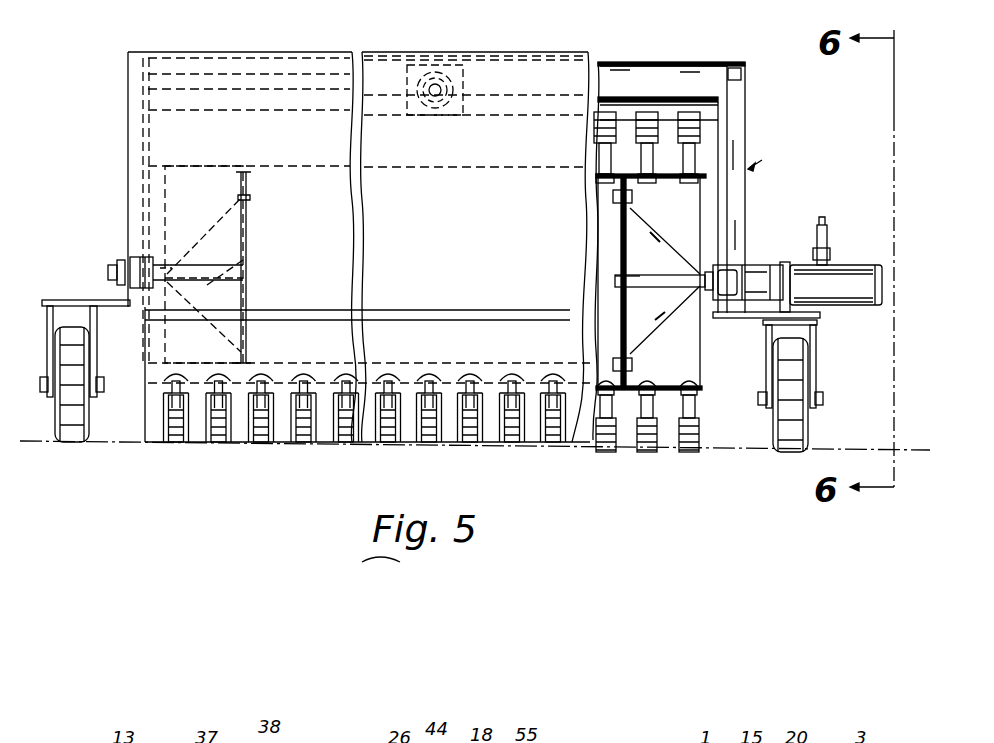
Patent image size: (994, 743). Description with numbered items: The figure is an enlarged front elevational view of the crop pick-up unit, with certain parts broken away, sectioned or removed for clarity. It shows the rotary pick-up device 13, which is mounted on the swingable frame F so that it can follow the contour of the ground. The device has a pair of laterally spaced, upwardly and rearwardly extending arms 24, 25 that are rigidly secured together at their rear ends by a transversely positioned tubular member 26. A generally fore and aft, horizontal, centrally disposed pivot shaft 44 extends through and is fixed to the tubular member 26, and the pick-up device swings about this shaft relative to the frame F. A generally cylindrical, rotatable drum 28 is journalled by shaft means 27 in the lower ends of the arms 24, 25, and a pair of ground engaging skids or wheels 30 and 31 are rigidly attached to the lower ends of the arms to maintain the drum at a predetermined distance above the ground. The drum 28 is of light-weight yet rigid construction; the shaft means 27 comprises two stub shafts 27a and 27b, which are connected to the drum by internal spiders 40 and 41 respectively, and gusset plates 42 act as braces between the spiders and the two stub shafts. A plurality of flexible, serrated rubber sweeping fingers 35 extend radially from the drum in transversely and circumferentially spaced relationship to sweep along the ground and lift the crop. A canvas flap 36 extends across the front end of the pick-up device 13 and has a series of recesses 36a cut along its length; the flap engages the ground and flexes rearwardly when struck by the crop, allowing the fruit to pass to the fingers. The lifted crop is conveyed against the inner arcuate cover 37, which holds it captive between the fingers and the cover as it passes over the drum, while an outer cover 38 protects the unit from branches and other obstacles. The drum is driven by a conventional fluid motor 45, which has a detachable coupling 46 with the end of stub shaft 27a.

The rotary pick-up device 13 is at (130, 51).
The arm 25 is at (128, 180).
The tubular member 26 is at (540, 61).
The pivot shaft 44 is at (445, 78).
The rotatable drum 28 is at (207, 165).
The internal spider 41 is at (250, 240).
The gusset plate 42 is at (240, 198).
The internal spider 40 is at (621, 246).
The shaft means 27 is at (108, 270).
The stub shaft 27a is at (668, 273).
The stub shaft 27b is at (170, 268).
The ground engaging wheel 31 is at (88, 412).
The rubber sweeping finger 35 is at (173, 444).
The canvas flap 36 is at (278, 447).
The recess 36a is at (346, 447).
The outer cover 38 is at (647, 62).
The inner arcuate cover 37 is at (681, 98).
The arm 24 is at (744, 210).
The swingable frame F is at (763, 156).
The detachable coupling 46 is at (756, 266).
The fluid motor 45 is at (843, 268).
The ground engaging wheel 30 is at (810, 444).